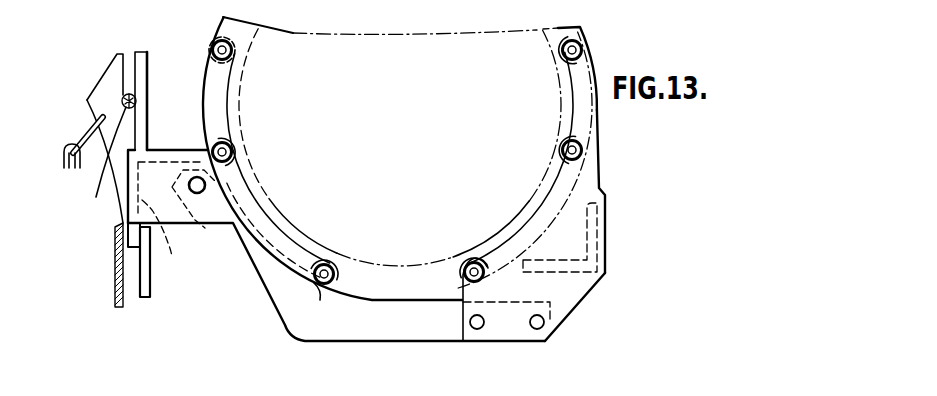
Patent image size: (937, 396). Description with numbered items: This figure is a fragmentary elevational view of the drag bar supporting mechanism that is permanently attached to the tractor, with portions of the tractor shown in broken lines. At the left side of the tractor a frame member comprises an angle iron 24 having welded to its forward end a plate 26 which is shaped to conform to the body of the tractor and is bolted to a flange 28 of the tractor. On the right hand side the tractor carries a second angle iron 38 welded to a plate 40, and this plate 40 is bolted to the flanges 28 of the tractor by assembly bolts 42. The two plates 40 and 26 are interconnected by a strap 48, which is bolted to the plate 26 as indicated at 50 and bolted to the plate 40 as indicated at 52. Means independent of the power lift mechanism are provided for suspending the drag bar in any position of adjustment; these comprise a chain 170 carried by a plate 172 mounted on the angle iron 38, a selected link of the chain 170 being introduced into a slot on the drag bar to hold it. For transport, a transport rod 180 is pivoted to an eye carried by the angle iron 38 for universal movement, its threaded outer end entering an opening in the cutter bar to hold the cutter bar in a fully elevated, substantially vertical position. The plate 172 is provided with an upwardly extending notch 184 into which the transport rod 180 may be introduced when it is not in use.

The angle iron 24 is at (581, 272).
The plate 26 is at (592, 182).
The flange 28 is at (223, 32).
The second angle iron 38 is at (160, 248).
The plate 40 is at (157, 173).
The assembly bolts 42 is at (238, 54).
The strap 48 is at (340, 327).
The bolted connection 50 is at (483, 323).
The bolted connection 52 is at (205, 187).
The chain 170 is at (63, 152).
The plate 172 is at (97, 100).
The transport rod 180 is at (90, 203).
The notch 184 is at (128, 62).